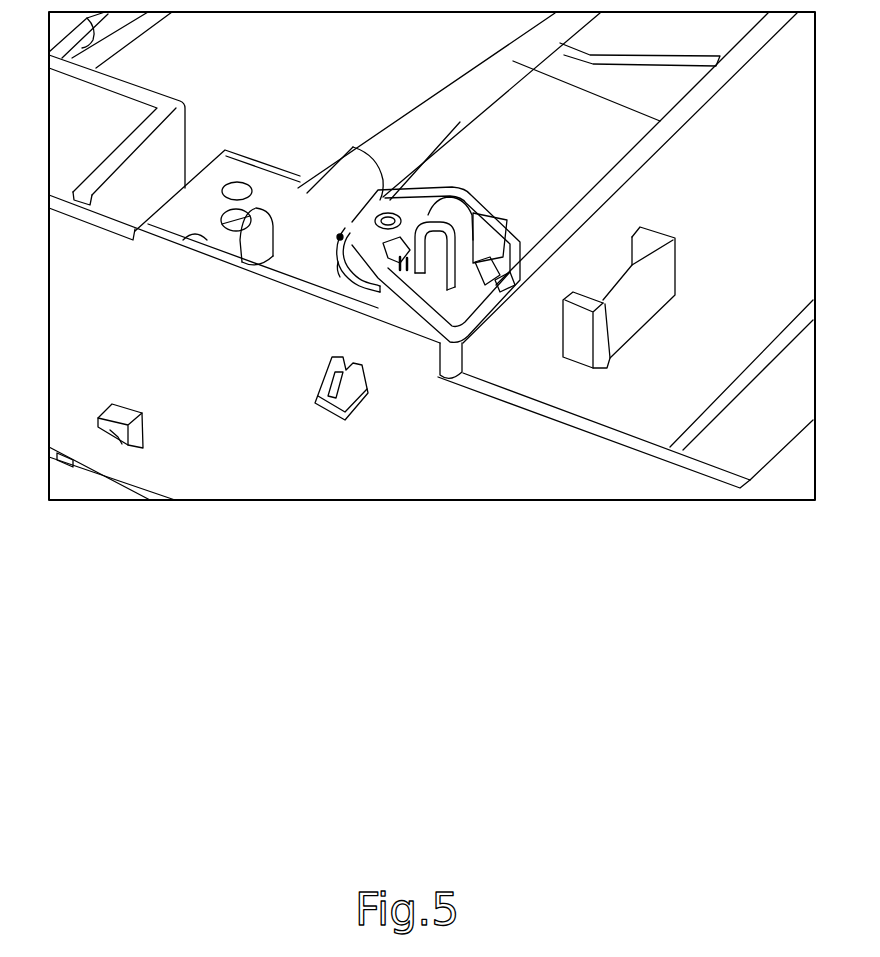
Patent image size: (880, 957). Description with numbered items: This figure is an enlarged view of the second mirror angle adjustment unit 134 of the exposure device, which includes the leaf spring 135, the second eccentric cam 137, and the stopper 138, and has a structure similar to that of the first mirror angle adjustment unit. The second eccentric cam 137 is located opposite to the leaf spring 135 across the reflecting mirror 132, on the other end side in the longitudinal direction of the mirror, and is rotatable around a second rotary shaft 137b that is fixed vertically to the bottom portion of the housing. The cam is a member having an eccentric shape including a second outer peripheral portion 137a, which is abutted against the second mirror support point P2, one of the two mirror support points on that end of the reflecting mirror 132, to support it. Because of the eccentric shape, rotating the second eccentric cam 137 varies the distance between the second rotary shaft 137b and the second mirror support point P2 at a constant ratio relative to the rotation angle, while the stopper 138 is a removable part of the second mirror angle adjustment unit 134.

The reflecting mirror 132 is at (450, 107).
The second mirror angle adjustment unit 134 is at (372, 266).
The leaf spring 135 is at (273, 240).
The second eccentric cam 137 is at (358, 292).
The second outer peripheral portion 137a is at (340, 277).
The second rotary shaft 137b is at (400, 218).
The stopper 138 is at (470, 250).
The second mirror support point P2 is at (340, 237).